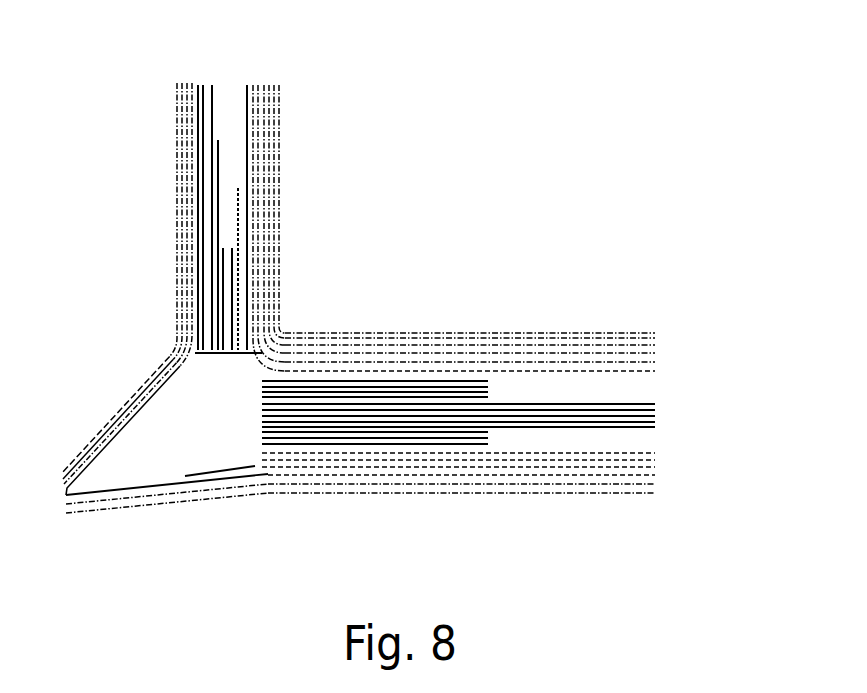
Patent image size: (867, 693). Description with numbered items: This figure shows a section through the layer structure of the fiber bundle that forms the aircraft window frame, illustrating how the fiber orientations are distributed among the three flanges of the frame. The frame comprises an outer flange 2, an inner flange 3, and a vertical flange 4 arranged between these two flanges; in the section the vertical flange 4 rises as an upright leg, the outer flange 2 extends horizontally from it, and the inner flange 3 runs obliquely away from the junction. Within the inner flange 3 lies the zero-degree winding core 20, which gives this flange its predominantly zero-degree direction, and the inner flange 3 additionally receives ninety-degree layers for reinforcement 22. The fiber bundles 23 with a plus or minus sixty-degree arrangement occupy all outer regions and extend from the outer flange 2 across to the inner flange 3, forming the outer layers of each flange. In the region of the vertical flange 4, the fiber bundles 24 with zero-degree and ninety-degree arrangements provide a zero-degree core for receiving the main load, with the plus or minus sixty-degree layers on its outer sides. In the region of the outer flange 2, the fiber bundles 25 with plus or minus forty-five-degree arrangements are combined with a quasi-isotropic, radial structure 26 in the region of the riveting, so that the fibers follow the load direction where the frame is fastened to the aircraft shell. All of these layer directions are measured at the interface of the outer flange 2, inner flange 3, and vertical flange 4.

The outer flange 2 is at (607, 338).
The inner flange 3 is at (97, 438).
The vertical flange 4 is at (282, 132).
The 0° winding core 20 is at (168, 445).
The 90° reinforcement 22 is at (238, 454).
The fiber bundles with ±60° arrangement 23 is at (158, 351).
The fiber bundles with 0° and 90° arrangements 24 is at (226, 173).
The fiber bundles with ±45° arrangements 25 is at (664, 370).
The quasi-isotropic radial structure 26 is at (429, 393).